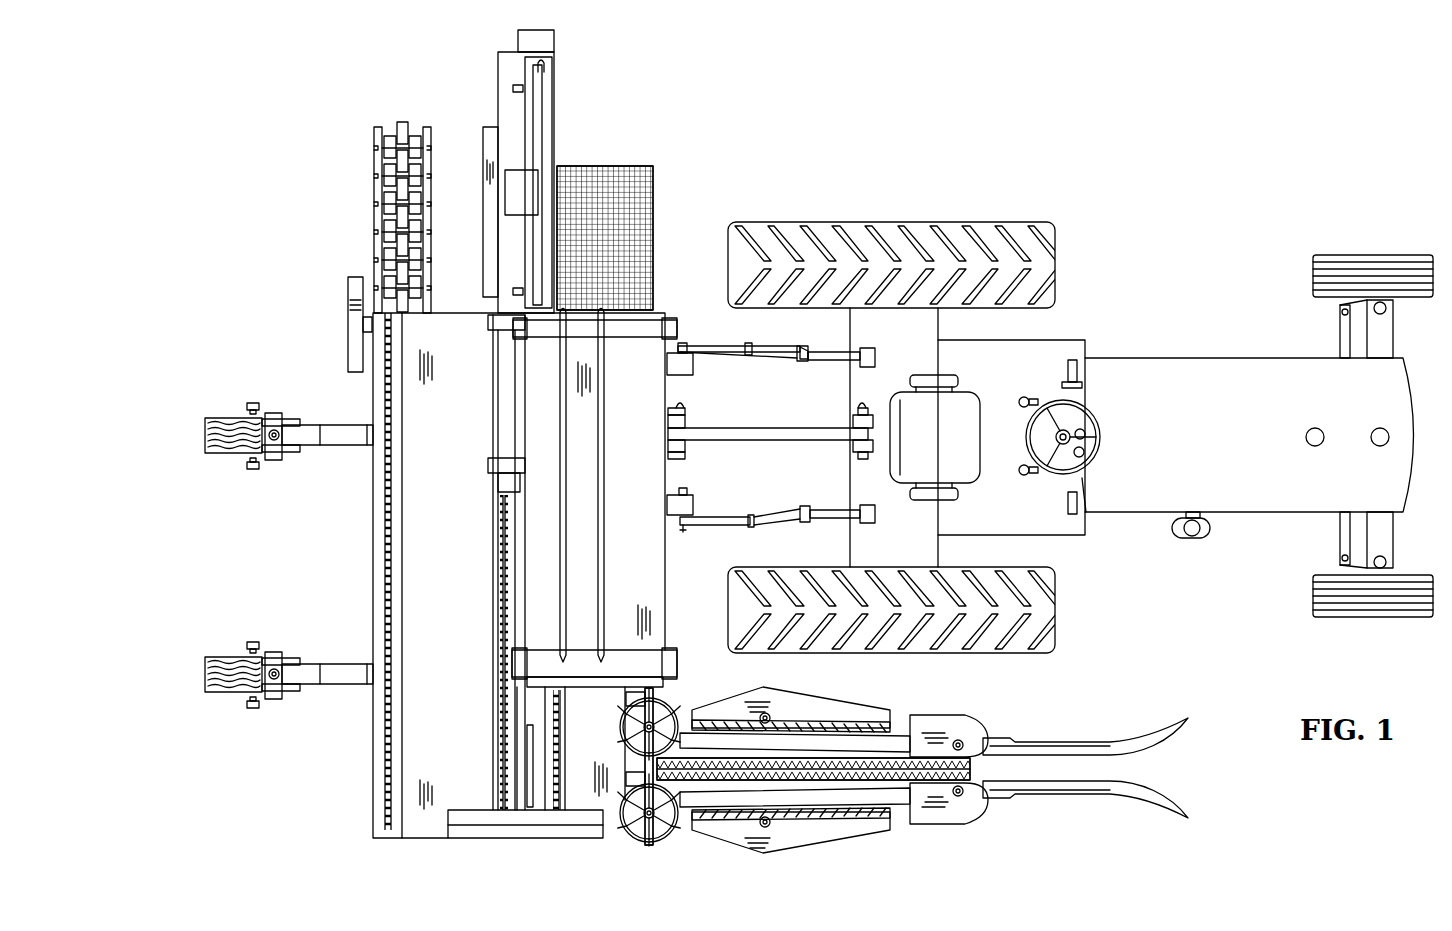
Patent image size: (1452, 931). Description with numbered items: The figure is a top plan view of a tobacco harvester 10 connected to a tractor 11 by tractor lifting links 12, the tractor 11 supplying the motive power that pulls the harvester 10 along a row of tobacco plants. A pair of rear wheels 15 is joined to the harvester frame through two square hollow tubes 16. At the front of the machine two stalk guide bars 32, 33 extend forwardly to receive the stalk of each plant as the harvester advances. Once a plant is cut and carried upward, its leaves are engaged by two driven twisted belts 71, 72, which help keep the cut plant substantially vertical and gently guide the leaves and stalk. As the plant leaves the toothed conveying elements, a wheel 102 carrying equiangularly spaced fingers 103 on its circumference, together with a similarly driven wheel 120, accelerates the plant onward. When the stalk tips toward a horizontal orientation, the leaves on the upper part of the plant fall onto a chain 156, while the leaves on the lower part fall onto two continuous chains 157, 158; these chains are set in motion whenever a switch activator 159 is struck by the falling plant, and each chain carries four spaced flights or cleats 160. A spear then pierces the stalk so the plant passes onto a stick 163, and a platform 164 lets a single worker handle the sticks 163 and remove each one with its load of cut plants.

The tobacco harvester 10 is at (649, 138).
The tractor 11 is at (1254, 524).
The tractor lifting links 12 is at (735, 443).
The rear wheels 15 is at (216, 700).
The square hollow tubes 16 is at (342, 450).
The stalk guide bar 32 is at (1082, 798).
The stalk guide bar 33 is at (1078, 740).
The twisted belt 71 is at (868, 808).
The twisted belt 72 is at (870, 723).
The wheel 102 is at (668, 840).
The fingers 103 is at (649, 846).
The wheel 120 is at (673, 715).
The chain 156 is at (392, 668).
The continuous chain 157 is at (500, 697).
The continuous chain 158 is at (550, 713).
The switch activator 159 is at (525, 752).
The flights or cleats 160 is at (496, 590).
The stick 163 is at (547, 120).
The platform 164 is at (653, 170).